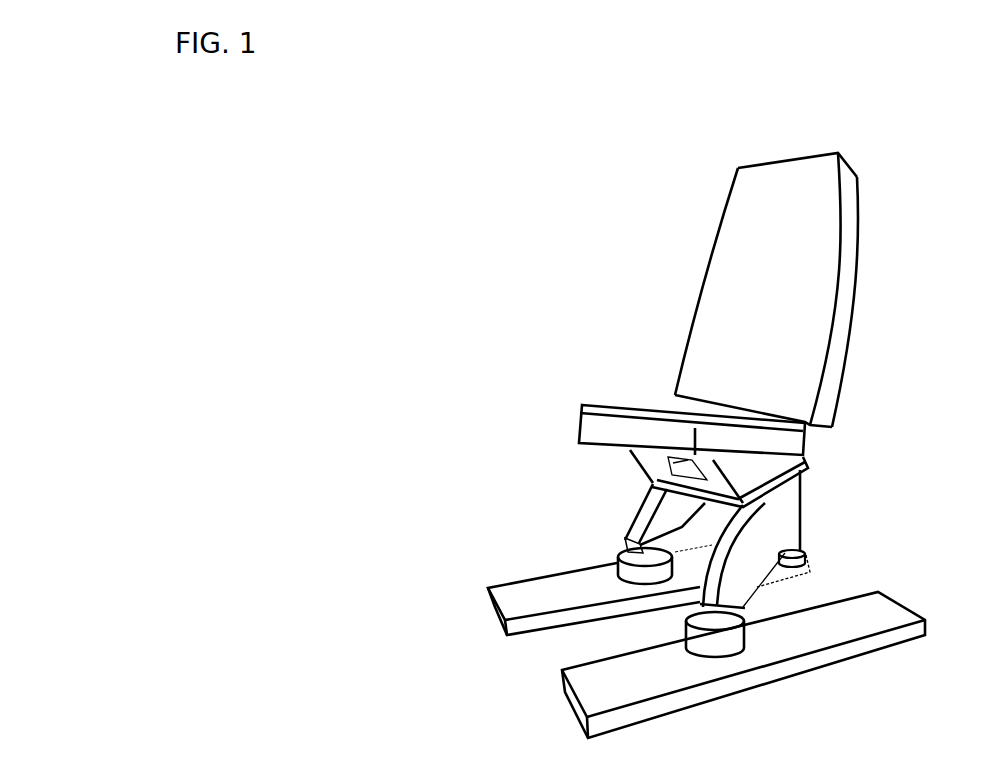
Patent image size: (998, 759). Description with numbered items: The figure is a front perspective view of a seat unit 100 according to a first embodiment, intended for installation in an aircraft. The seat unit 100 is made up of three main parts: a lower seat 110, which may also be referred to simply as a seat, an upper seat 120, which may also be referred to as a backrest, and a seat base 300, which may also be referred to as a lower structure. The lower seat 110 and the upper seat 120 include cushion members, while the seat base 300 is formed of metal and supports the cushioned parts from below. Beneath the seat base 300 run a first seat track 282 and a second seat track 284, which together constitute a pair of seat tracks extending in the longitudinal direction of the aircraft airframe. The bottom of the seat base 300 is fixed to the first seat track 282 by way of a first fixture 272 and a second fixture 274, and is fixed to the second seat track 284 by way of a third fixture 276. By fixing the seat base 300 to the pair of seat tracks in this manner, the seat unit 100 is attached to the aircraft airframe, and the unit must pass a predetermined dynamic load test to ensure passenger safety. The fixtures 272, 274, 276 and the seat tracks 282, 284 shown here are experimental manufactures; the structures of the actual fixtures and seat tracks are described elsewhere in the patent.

The seat unit 100 is at (790, 145).
The lower seat 110 is at (593, 423).
The upper seat 120 is at (852, 198).
The seat base 300 is at (807, 465).
The first fixture 272 is at (630, 540).
The second fixture 274 is at (812, 557).
The third fixture 276 is at (728, 642).
The first seat track 282 is at (497, 588).
The second seat track 284 is at (593, 697).